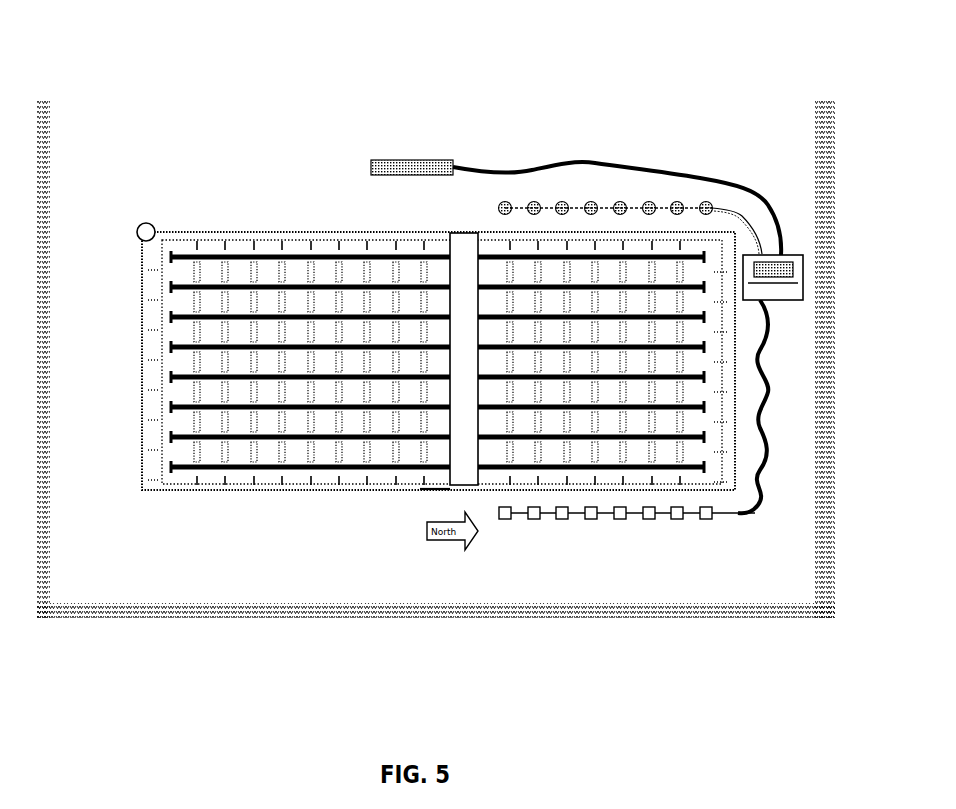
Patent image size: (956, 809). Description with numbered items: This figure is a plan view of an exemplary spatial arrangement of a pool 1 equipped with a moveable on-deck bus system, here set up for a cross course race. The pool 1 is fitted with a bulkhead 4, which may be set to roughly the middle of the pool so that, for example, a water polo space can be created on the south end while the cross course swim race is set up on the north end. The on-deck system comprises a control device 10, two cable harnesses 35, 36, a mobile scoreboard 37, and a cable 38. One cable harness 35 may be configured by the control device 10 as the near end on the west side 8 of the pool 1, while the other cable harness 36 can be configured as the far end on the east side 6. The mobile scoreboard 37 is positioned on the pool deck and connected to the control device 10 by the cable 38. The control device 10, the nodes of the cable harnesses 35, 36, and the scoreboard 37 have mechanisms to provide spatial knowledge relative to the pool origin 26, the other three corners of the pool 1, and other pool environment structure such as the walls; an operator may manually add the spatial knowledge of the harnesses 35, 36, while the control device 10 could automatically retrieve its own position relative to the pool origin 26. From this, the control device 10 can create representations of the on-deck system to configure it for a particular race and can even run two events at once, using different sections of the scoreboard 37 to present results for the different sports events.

The pool 1 is at (352, 362).
The bulkhead 4 is at (468, 262).
The east side 6 is at (435, 488).
The west side 8 is at (375, 230).
The control device 10 is at (772, 270).
The pool origin 26 is at (145, 223).
The cable harness 35 is at (740, 213).
The cable harness 36 is at (753, 516).
The mobile scoreboard 37 is at (402, 168).
The cable 38 is at (520, 172).